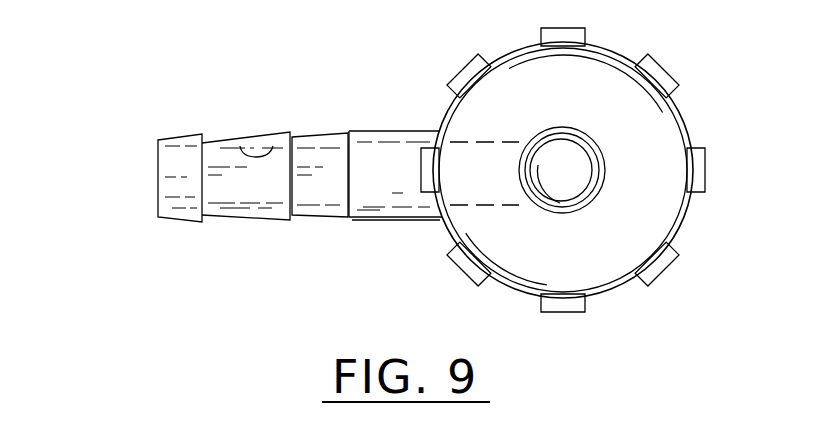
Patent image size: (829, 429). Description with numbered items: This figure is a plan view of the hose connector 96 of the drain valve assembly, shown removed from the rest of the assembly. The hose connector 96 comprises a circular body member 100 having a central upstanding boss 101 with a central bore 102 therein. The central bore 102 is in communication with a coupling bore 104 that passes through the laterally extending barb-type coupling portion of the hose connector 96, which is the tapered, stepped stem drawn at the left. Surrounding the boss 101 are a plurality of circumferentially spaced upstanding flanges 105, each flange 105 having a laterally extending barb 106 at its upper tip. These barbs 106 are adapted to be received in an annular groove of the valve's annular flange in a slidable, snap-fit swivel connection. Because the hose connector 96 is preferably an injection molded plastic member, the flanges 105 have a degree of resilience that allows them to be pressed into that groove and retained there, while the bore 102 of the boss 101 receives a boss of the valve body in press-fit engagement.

The hose connector 96 is at (380, 219).
The circular body member 100 is at (688, 127).
The central upstanding boss 101 is at (595, 157).
The central bore 102 is at (577, 192).
The coupling bore 104 is at (273, 146).
The upstanding flange 105 is at (650, 53).
The barb 106 is at (578, 312).